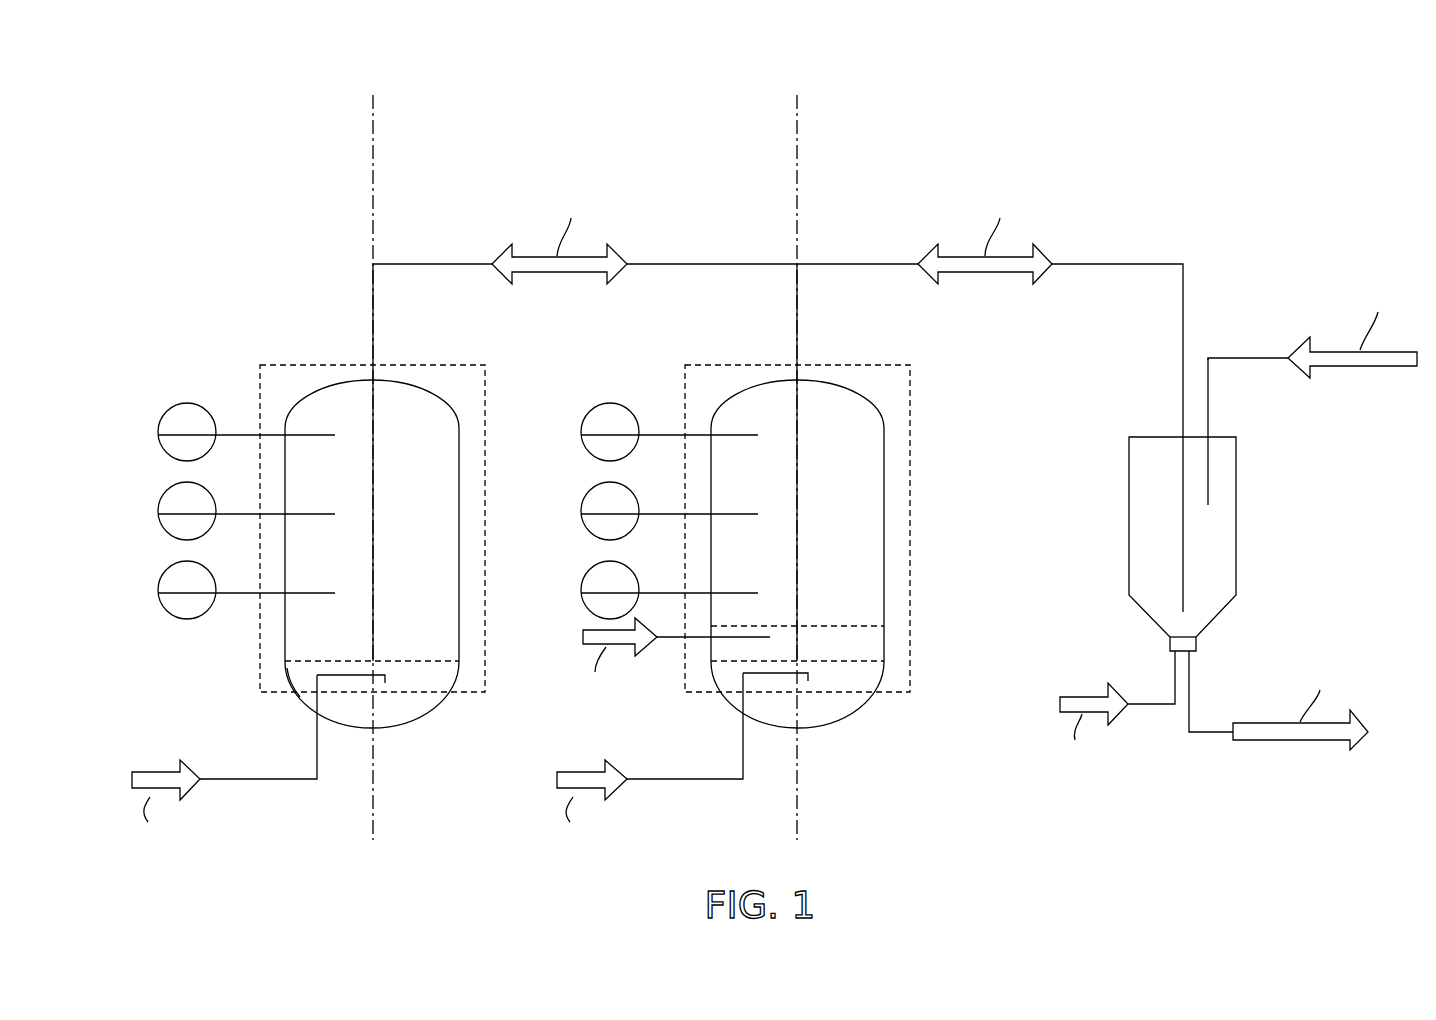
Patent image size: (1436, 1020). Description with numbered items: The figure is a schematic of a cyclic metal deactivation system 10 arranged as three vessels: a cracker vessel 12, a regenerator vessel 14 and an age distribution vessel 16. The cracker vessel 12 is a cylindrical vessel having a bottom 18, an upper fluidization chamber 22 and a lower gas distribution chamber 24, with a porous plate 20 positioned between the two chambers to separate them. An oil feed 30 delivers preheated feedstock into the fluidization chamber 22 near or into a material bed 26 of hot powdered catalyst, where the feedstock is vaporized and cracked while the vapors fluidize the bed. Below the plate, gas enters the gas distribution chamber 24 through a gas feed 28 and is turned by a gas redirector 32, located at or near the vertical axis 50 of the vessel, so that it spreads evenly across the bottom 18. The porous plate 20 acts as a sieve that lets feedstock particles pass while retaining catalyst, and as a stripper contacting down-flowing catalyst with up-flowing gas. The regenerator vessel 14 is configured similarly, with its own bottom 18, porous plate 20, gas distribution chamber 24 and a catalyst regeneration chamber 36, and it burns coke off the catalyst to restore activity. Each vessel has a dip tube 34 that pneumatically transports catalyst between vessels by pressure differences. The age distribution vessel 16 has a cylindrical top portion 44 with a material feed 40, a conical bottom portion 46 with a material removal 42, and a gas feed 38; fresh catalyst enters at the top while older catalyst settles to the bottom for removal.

The cyclic metal deactivation system 10 is at (336, 42).
The cracker vessel 12 is at (678, 378).
The regenerator vessel 14 is at (243, 378).
The age distribution vessel 16 is at (1118, 452).
The bottom 18 is at (384, 730).
The porous plate 20 is at (420, 660).
The fluidization chamber 22 is at (863, 578).
The gas distribution chamber 24 is at (300, 697).
The material bed 26 is at (870, 646).
The gas feed 28 is at (226, 782).
The oil feed 30 is at (657, 640).
The gas redirector 32 is at (388, 678).
The dip tube 34 is at (374, 454).
The catalyst regeneration chamber 36 is at (307, 616).
The gas feed 38 is at (1147, 706).
The material feed 40 is at (1248, 357).
The material removal 42 is at (1189, 726).
The top portion 44 is at (1228, 437).
The bottom portion 46 is at (1197, 640).
The vertical axis 50 is at (370, 128).